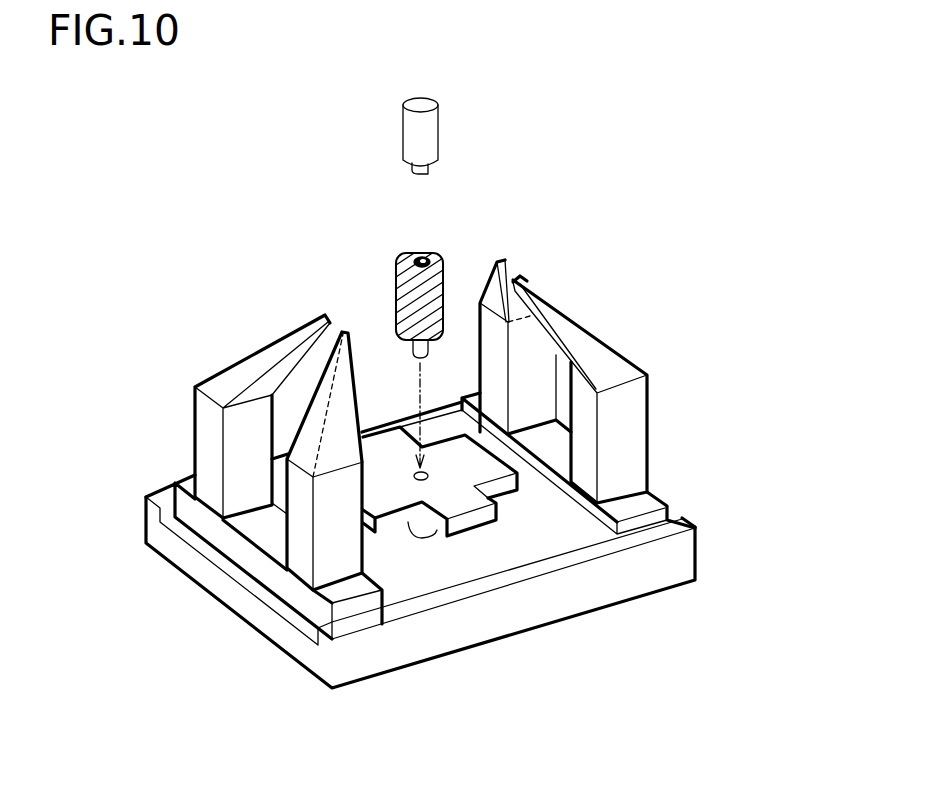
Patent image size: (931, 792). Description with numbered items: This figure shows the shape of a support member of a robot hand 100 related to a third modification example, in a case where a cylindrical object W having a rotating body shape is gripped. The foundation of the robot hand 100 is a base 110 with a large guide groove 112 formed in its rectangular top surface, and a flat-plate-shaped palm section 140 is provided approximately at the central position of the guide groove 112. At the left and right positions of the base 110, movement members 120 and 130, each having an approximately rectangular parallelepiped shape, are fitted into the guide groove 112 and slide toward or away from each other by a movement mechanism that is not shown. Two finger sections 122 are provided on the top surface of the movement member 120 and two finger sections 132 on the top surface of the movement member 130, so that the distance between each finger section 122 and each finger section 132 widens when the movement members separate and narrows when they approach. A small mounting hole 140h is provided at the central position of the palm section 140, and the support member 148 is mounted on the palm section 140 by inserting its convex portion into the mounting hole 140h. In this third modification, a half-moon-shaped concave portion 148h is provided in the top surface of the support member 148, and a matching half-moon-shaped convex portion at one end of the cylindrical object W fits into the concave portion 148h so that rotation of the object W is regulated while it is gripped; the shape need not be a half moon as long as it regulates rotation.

The robot hand 100 is at (338, 272).
The base 110 is at (240, 620).
The guide groove 112 is at (413, 572).
The movement member 120 is at (187, 479).
The finger sections 122 is at (305, 410).
The movement member 130 is at (652, 490).
The finger sections 132 is at (557, 298).
The palm section 140 is at (472, 528).
The mounting hole 140h is at (427, 478).
The support member 148 is at (393, 283).
The concave portion 148h is at (430, 253).
The object W is at (442, 130).